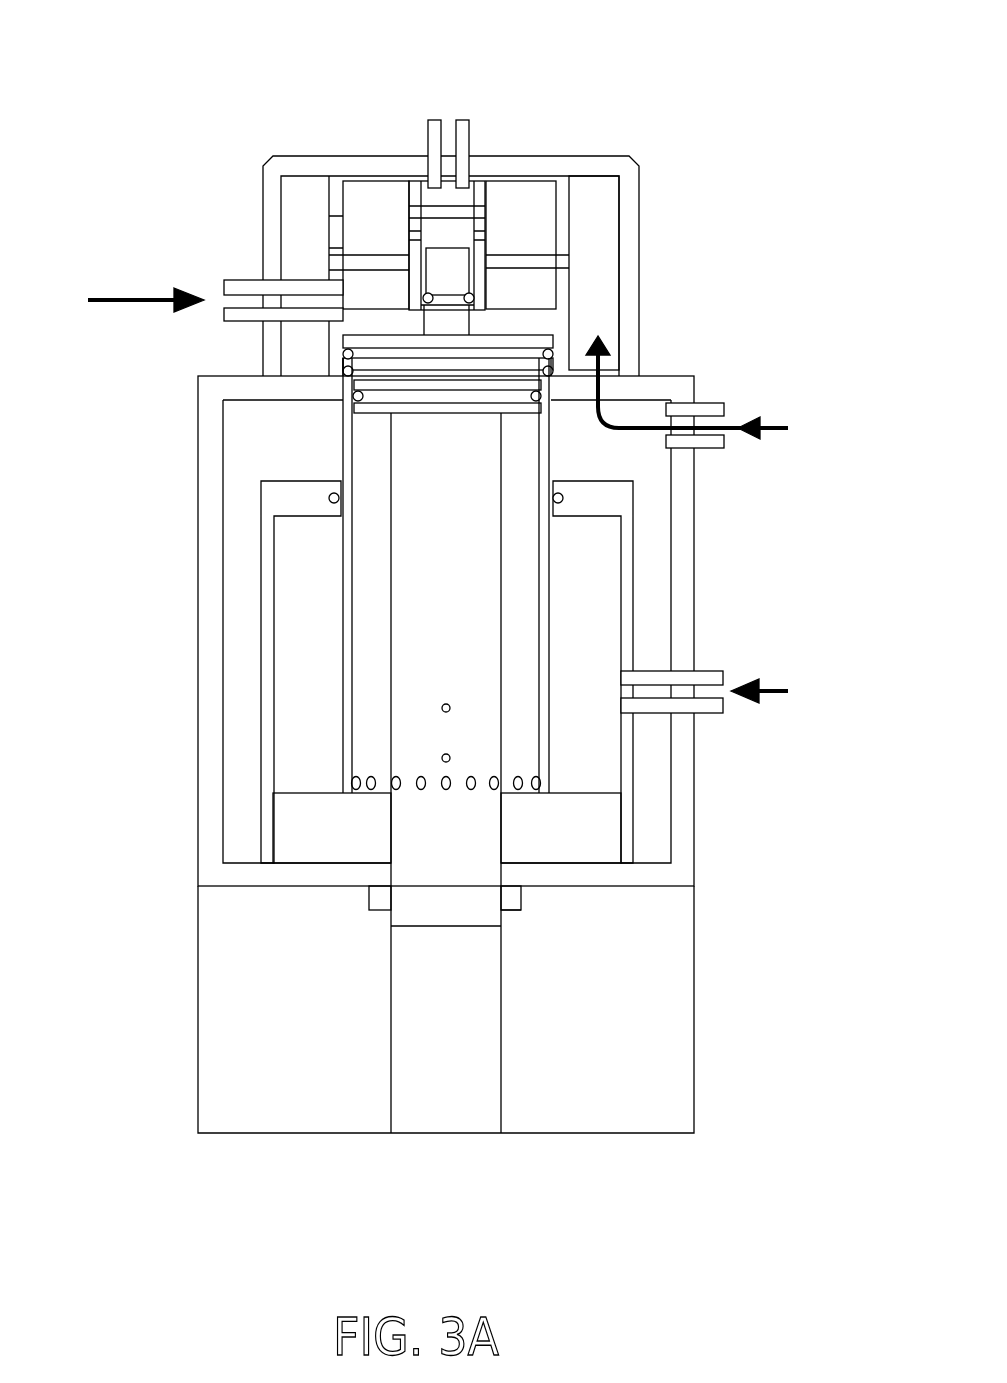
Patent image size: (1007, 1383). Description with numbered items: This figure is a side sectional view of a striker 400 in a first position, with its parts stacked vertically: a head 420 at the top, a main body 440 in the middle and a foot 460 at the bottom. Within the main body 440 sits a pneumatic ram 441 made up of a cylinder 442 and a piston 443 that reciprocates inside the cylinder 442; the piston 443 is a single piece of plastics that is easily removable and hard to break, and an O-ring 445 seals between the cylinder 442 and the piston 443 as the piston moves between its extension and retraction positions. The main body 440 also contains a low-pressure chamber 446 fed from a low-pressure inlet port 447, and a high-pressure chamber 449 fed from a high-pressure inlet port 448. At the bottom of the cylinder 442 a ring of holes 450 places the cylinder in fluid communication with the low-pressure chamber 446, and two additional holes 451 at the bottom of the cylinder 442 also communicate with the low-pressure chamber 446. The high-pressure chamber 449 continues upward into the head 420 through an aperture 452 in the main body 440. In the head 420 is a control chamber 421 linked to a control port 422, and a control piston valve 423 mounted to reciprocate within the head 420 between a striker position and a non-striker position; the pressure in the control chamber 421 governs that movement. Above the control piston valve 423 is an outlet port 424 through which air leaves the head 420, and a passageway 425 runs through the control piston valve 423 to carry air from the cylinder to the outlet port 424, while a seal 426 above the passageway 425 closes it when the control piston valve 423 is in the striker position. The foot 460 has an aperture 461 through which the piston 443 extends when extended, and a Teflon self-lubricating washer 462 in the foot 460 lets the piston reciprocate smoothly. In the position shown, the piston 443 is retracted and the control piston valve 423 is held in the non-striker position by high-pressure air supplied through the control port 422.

The striker 400 is at (658, 124).
The head 420 is at (655, 177).
The control chamber 421 is at (381, 288).
The control port 422 is at (230, 272).
The control piston valve 423 is at (520, 338).
The outlet port 424 is at (458, 127).
The passageway 425 is at (452, 268).
The seal 426 is at (437, 209).
The main body 440 is at (705, 556).
The pneumatic ram 441 is at (332, 387).
The cylinder 442 is at (343, 453).
The piston 443 is at (423, 557).
The O-ring 445 is at (343, 409).
The low-pressure chamber 446 is at (582, 738).
The low-pressure inlet port 447 is at (715, 668).
The high-pressure inlet port 448 is at (717, 398).
The high-pressure chamber 449 is at (598, 235).
The ring of holes 450 is at (353, 778).
The additional holes 451 is at (442, 753).
The aperture 452 is at (607, 385).
The foot 460 is at (702, 1030).
The aperture 461 is at (440, 1053).
The washer 462 is at (517, 895).